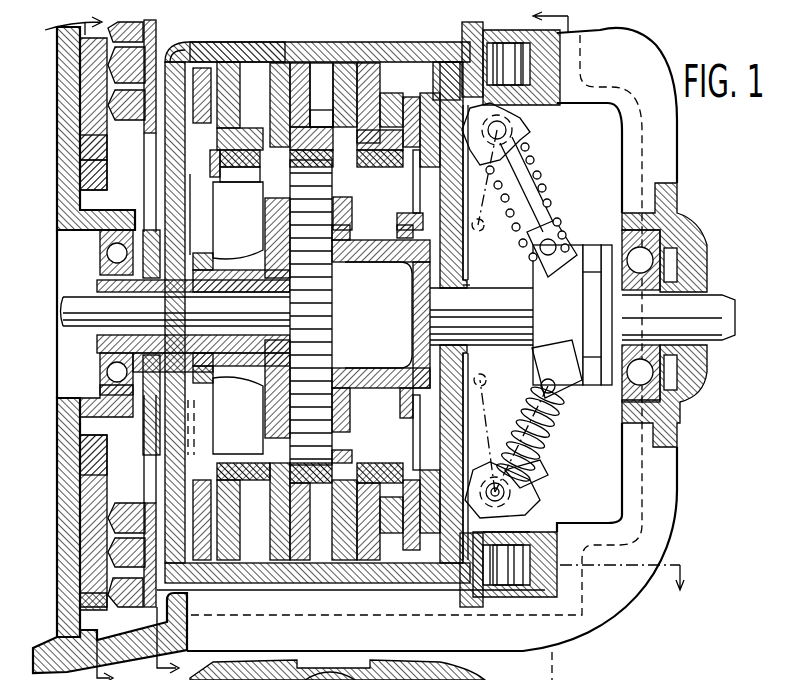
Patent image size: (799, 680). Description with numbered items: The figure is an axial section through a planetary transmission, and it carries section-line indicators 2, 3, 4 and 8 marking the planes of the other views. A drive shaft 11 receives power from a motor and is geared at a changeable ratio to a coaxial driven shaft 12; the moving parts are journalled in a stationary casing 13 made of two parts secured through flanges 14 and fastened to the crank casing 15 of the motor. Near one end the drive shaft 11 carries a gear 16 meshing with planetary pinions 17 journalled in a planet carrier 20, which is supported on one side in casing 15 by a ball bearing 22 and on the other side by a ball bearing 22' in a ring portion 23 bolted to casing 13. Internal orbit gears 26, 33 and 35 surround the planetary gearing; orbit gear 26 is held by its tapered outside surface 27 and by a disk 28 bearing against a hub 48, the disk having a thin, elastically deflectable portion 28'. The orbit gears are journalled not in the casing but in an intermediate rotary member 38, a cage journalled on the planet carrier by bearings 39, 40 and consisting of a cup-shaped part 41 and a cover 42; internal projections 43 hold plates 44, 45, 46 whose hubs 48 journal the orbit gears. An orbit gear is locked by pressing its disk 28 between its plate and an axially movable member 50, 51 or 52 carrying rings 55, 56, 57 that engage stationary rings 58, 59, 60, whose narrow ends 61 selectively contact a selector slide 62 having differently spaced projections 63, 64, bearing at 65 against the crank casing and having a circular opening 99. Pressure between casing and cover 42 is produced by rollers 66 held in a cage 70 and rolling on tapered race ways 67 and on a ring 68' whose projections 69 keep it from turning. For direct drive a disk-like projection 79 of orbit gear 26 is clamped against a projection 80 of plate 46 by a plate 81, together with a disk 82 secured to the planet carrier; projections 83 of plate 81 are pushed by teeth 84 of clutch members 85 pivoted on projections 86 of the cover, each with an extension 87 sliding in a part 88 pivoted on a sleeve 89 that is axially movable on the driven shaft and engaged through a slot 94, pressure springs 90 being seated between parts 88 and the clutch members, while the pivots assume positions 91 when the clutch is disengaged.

The section line 2- 2 is at (66, 348).
The section line 3- 3 is at (570, 16).
The section line 4- 4 is at (166, 418).
The section line 8- 8 is at (447, 590).
The drive shaft 11 is at (75, 303).
The driven shaft 12 is at (712, 305).
The stationary casing 13 is at (635, 487).
The flanges 14 is at (612, 595).
The crank casing 15 is at (68, 212).
The gear 16 is at (320, 314).
The planetary pinions 17 is at (318, 265).
The planet carrier 20 is at (97, 335).
The ball bearing 22 is at (79, 312).
The ball bearing 22' is at (685, 316).
The ring portion 23 is at (690, 400).
The internal orbit gear 26 is at (430, 168).
The tapered outside surface 27 is at (414, 175).
The disk 28 is at (380, 177).
The thin portions 28' is at (203, 122).
The internal orbit gear 33 is at (295, 168).
The internal orbit gear 35 is at (255, 168).
The intermediate rotary member 38 is at (400, 60).
The bearing 39 is at (188, 392).
The bearing 40 is at (465, 352).
The cage 41 is at (368, 62).
The cover 42 is at (465, 60).
The internal projections 43 is at (280, 62).
The plate 44 is at (238, 115).
The plate 45 is at (320, 95).
The plate 46 is at (392, 105).
The hubs 48 is at (320, 127).
The axially movable member 50 is at (228, 46).
The axially movable member 51 is at (345, 62).
The axially movable member 52 is at (300, 62).
The ring 55 is at (152, 125).
The intermediate ring 56 is at (195, 52).
The ring 57 is at (165, 40).
The stationary ring 58 is at (110, 517).
The stationary ring 59 is at (112, 552).
The stationary ring 60 is at (110, 588).
The narrow ends 61 is at (95, 110).
The selector slide 62 is at (92, 172).
The projection 63 is at (85, 70).
The projection 64 is at (92, 492).
The bearing point 65 is at (90, 147).
The rollers 66 is at (512, 588).
The race ways 67 is at (552, 545).
The ring 68' is at (518, 521).
The projections 69 is at (482, 600).
The cage 70 is at (540, 595).
The disk-like projection 79 is at (395, 585).
The projection 80 is at (380, 585).
The plate 81 is at (418, 410).
The disk 82 is at (420, 585).
The projections 83 is at (490, 160).
The teeth 84 is at (508, 128).
The clutch member 85 is at (530, 480).
The projections 86 is at (510, 492).
The extension 87 is at (540, 445).
The part 88 is at (566, 390).
The sleeve 89 is at (558, 315).
The pressure spring 90 is at (535, 172).
The positions 91 is at (481, 311).
The slot 94 is at (604, 245).
The circular opening 99 is at (90, 405).